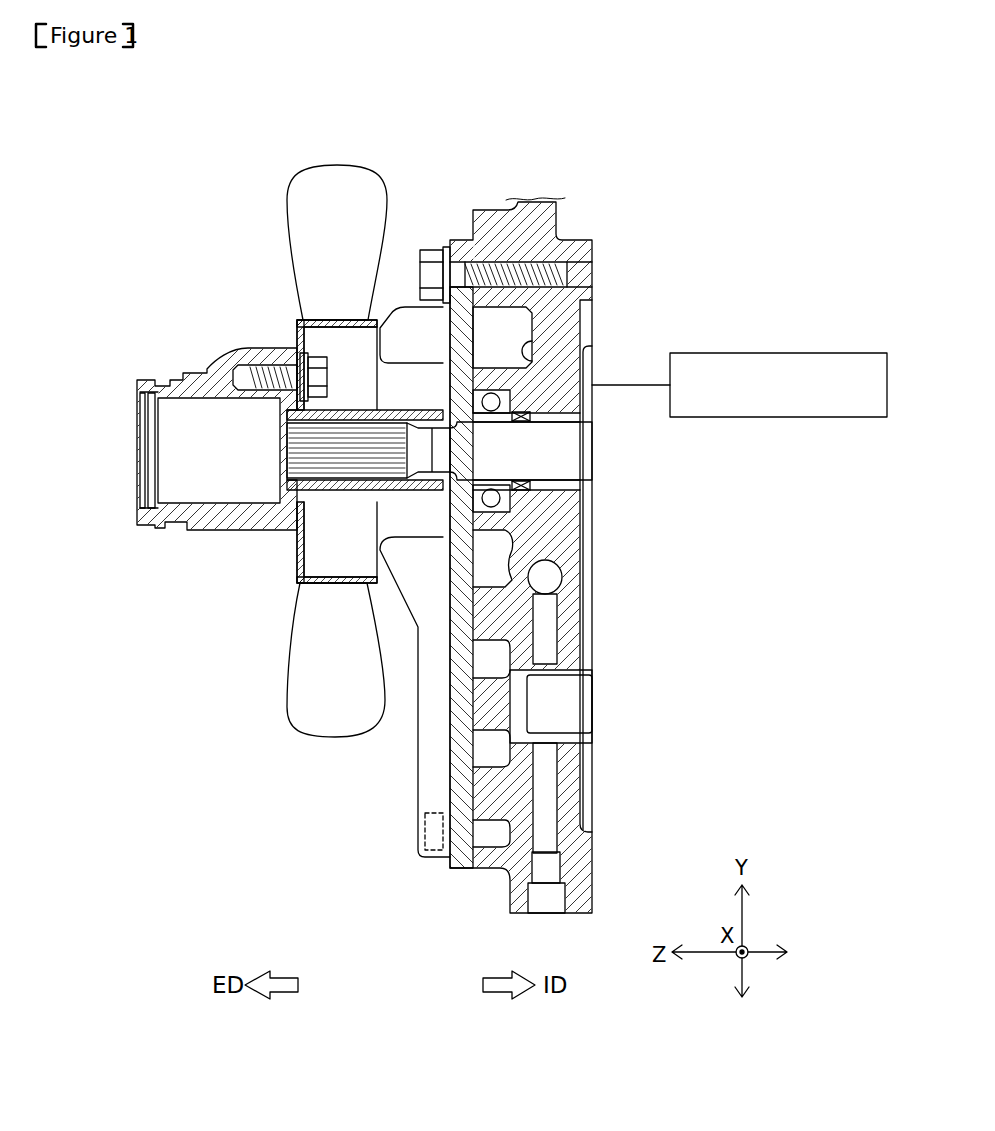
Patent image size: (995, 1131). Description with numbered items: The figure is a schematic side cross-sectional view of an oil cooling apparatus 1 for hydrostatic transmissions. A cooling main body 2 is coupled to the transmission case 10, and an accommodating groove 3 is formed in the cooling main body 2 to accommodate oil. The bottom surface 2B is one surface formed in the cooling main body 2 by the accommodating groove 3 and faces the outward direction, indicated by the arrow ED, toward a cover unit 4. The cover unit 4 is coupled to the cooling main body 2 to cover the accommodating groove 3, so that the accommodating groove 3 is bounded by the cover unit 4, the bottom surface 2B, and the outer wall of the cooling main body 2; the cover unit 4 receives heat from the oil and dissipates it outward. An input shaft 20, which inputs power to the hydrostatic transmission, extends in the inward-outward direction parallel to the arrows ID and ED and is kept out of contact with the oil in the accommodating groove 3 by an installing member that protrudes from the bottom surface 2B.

The oil cooling apparatus 1 is at (160, 153).
The cooling main body 2 is at (475, 210).
The accommodating groove 3 is at (513, 333).
The bottom surface 2B is at (525, 360).
The cover unit 4 is at (462, 847).
The transmission case 10 is at (860, 353).
The input shaft 20 is at (310, 457).